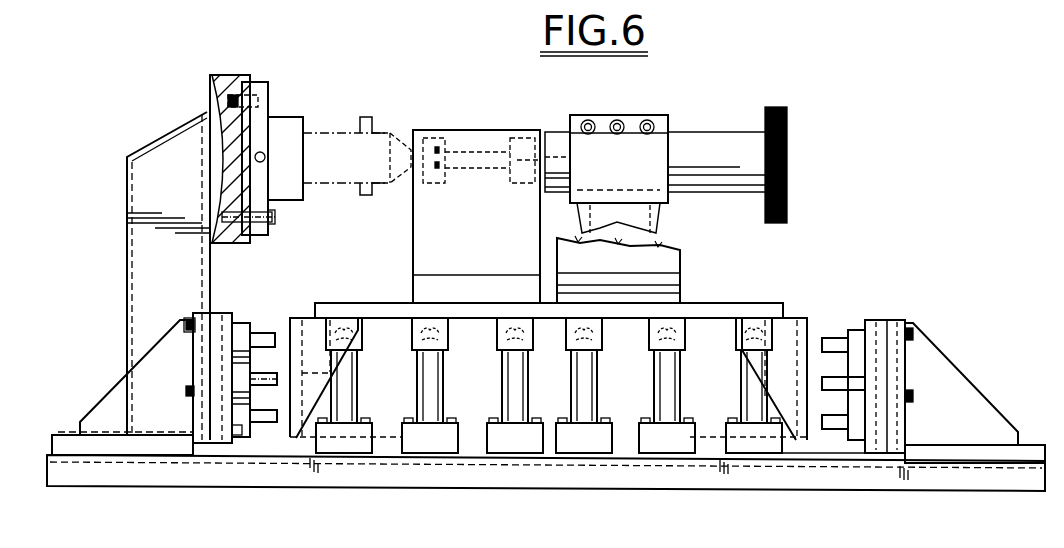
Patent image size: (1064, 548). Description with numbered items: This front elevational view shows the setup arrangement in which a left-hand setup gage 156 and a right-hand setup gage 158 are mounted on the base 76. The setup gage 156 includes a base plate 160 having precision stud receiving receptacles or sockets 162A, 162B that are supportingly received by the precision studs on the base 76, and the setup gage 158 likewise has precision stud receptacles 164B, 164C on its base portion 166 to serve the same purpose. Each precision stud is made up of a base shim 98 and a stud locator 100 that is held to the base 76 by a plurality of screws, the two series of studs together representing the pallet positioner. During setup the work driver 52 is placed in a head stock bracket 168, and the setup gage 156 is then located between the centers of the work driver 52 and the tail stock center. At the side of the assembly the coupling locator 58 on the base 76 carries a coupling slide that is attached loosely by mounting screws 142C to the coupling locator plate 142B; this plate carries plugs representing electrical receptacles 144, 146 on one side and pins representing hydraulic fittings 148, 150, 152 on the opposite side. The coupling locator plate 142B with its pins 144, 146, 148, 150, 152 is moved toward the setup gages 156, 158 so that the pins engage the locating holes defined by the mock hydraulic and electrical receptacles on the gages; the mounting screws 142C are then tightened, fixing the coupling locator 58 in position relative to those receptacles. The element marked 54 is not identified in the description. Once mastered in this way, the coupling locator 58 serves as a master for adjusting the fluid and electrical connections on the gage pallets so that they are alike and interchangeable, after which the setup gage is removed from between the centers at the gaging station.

The work driver 52 is at (300, 118).
The drive assembly 54 is at (689, 134).
The coupling locator 58 is at (108, 385).
The base 76 is at (607, 478).
The base shim 98 is at (345, 455).
The stud locator 100 is at (365, 442).
The coupling locator plate 142B is at (222, 313).
The mounting screws 142C is at (187, 393).
The electrical receptacle plug 144 is at (243, 323).
The electrical receptacle plug 146 is at (240, 440).
The hydraulic fitting pin 148 is at (258, 328).
The hydraulic fitting pin 150 is at (268, 370).
The hydraulic fitting pin 152 is at (267, 423).
The left-hand setup gage 156 is at (382, 300).
The right-hand setup gage 158 is at (733, 305).
The base plate 160 is at (392, 308).
The precision stud receiving socket 162A is at (430, 318).
The precision stud receiving socket 162B is at (503, 313).
The precision stud receptacle 164B is at (595, 322).
The precision stud receptacle 164C is at (742, 351).
The base portion 166 is at (655, 308).
The head stock bracket 168 is at (169, 140).